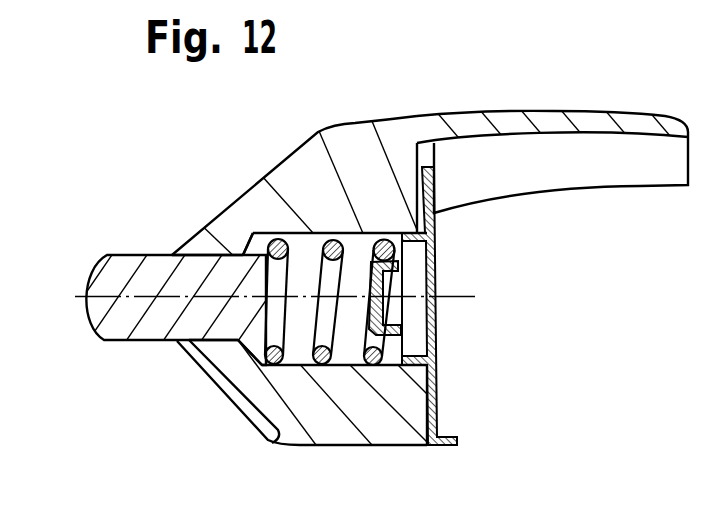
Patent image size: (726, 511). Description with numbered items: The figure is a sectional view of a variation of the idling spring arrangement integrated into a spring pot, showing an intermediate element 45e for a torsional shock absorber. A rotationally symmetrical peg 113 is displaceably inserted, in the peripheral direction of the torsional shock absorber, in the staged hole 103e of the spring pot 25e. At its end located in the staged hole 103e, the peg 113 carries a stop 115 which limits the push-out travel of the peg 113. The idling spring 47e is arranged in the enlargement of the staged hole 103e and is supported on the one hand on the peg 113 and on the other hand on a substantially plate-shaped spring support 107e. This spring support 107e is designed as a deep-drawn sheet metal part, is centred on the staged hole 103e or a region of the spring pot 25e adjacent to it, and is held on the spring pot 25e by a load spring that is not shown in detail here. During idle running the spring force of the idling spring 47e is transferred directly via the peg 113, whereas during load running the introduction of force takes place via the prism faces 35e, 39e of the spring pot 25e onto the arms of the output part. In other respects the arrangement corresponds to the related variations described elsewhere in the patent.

The spring pot 25e is at (356, 156).
The prism face 35e is at (289, 156).
The intermediate element 45e is at (401, 172).
The stop 115 is at (248, 252).
The peg 113 is at (104, 317).
The prism face 39e is at (203, 373).
The spring support 107e is at (437, 405).
The idling spring 47e is at (333, 370).
The staged hole 103e is at (289, 362).